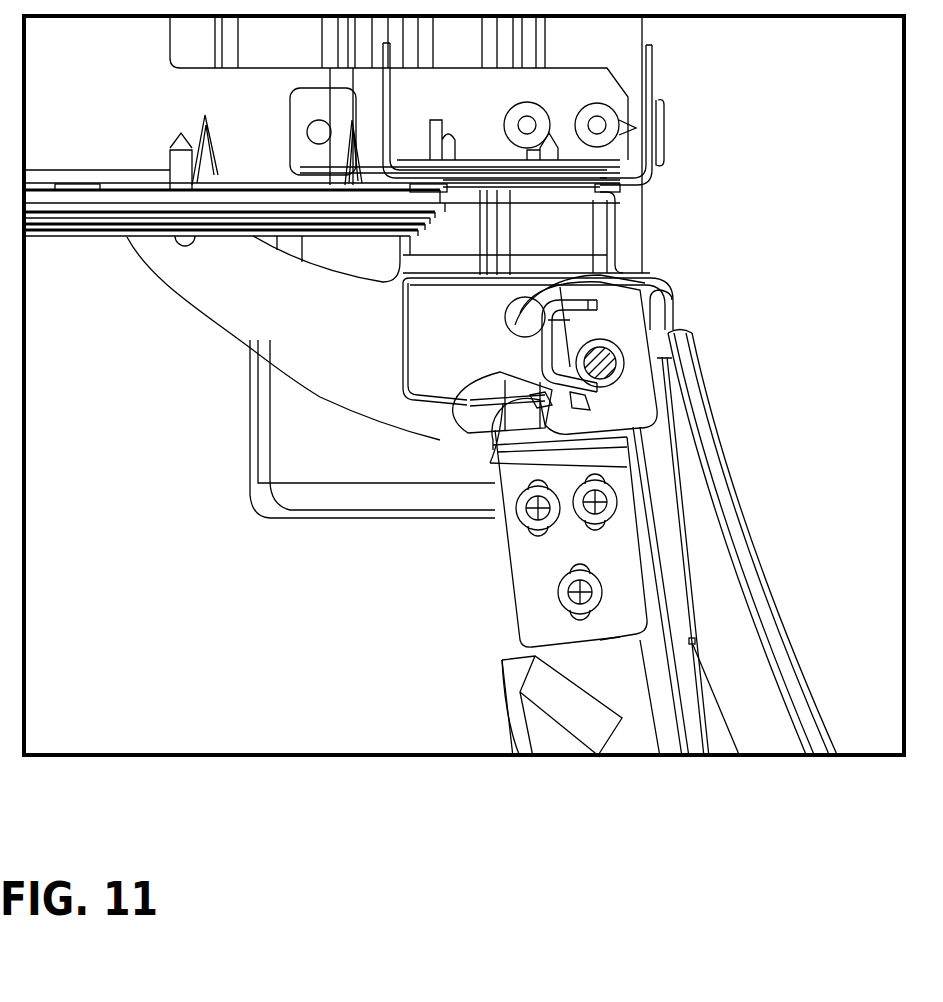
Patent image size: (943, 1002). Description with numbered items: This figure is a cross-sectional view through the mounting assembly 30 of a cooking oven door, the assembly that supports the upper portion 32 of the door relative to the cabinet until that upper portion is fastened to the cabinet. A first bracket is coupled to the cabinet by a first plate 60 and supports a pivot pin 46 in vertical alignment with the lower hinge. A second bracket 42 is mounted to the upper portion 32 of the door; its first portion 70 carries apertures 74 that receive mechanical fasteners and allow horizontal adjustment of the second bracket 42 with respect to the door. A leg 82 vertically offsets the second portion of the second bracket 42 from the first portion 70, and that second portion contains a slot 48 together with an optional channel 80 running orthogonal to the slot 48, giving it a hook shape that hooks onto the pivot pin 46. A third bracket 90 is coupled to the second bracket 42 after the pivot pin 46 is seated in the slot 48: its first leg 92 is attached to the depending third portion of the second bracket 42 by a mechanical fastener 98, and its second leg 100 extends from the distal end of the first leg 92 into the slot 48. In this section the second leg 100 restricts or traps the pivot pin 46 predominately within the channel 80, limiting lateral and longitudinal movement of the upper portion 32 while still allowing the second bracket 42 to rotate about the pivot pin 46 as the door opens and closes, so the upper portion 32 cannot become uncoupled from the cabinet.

The mounting assembly 30 is at (688, 229).
The upper portion 32 is at (760, 600).
The second bracket 42 is at (506, 611).
The pivot pin 46 is at (622, 360).
The slot 48 is at (593, 428).
The first plate 60 is at (435, 298).
The first portion 70 is at (538, 565).
The apertures 74 is at (583, 528).
The channel 80 is at (617, 340).
The leg 82 is at (565, 447).
The third bracket 90 is at (520, 318).
The first leg 92 is at (535, 396).
The mechanical fastener 98 is at (450, 372).
The second leg 100 is at (578, 396).